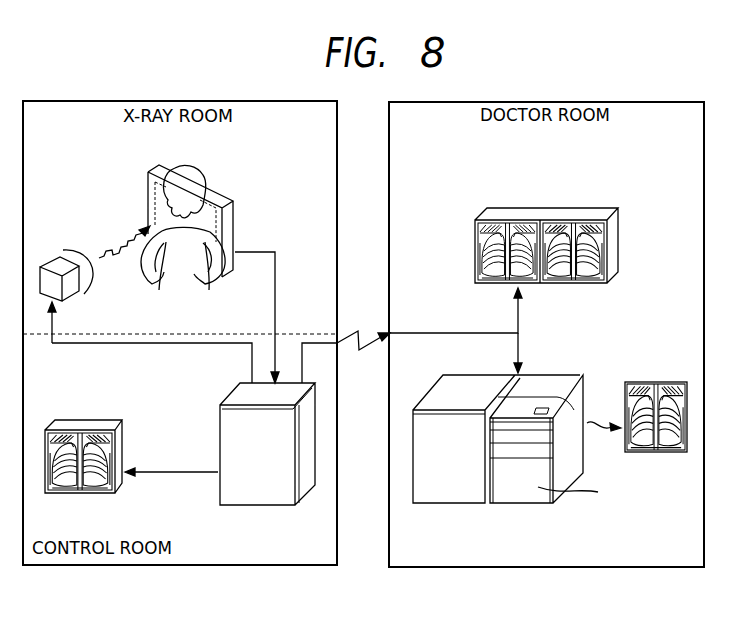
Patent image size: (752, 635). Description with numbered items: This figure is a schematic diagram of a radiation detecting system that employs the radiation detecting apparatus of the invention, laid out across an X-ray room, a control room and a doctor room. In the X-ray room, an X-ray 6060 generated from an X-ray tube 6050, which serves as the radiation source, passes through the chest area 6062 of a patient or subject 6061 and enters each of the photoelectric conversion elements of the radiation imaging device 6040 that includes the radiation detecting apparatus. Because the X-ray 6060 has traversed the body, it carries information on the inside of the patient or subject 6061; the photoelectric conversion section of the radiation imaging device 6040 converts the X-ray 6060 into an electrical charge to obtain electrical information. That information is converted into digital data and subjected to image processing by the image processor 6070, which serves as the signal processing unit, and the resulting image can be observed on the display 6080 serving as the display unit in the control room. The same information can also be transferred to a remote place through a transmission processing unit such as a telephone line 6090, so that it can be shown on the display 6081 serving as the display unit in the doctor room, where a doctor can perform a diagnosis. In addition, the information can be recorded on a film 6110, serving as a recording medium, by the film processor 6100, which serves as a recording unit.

The radiation imaging device 6040 is at (228, 199).
The X-ray tube 6050 is at (53, 263).
The X-ray 6060 is at (115, 268).
The patient or subject 6061 is at (195, 168).
The chest area 6062 is at (185, 260).
The image processor 6070 is at (250, 493).
The display 6080 is at (80, 423).
The display 6081 is at (515, 213).
The telephone line 6090 is at (359, 328).
The film processor 6100 is at (448, 493).
The film 6110 is at (648, 382).